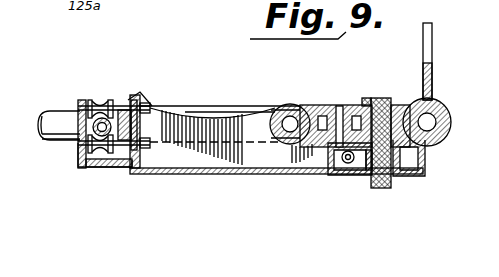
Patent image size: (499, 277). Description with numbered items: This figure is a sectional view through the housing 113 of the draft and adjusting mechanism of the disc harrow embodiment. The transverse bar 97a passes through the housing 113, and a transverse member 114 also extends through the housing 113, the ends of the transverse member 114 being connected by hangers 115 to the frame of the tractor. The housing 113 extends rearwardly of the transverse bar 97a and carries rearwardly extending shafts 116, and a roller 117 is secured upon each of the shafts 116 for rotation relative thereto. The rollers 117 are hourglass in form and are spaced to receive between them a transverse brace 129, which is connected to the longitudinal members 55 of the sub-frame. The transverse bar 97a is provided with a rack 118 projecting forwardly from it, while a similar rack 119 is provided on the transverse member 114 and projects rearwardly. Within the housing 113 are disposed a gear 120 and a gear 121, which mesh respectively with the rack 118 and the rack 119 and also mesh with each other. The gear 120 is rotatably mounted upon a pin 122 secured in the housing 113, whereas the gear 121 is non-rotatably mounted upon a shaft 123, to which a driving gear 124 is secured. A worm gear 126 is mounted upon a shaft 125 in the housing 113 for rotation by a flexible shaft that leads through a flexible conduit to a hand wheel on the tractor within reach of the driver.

The longitudinal members 55 is at (62, 116).
The transverse brace 129 is at (80, 137).
The shafts 116 is at (126, 108).
The roller 117 is at (96, 108).
The housing 113 is at (262, 95).
The transverse bar 97a is at (288, 105).
The rack 118 is at (307, 106).
The gear 120 is at (329, 105).
The pin 122 is at (340, 106).
The shaft 123 is at (385, 97).
The hangers 115 is at (433, 33).
The gear 121 is at (417, 100).
The transverse member 114 is at (447, 134).
The rack 119 is at (424, 154).
The driving gear 124 is at (357, 165).
The shaft 125 is at (350, 164).
The worm gear 126 is at (313, 176).